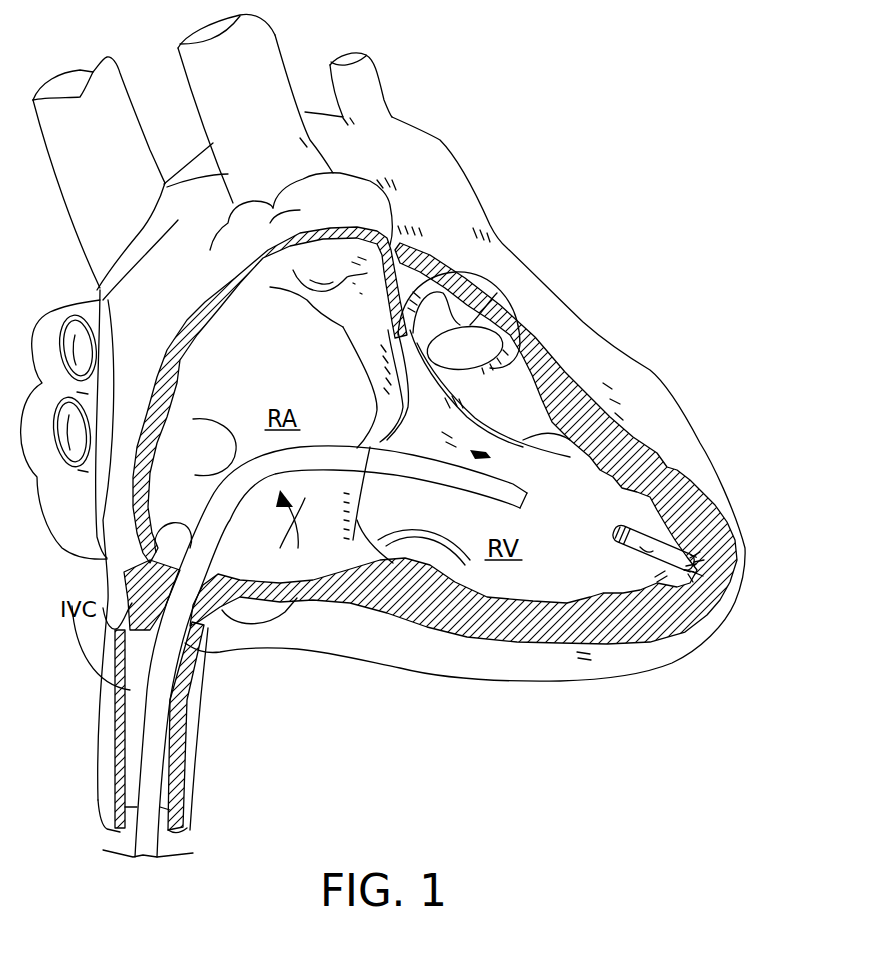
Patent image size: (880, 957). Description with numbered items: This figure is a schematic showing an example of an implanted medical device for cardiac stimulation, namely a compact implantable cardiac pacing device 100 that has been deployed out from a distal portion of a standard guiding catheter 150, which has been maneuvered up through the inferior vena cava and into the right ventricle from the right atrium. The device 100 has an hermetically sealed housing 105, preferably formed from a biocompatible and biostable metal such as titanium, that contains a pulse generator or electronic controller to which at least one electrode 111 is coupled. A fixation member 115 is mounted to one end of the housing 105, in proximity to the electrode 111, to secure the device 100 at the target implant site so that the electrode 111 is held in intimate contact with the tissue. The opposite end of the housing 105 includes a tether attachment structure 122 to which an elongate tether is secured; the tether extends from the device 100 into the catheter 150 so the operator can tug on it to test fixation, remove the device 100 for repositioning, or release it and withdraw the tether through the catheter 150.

The device 100 is at (683, 570).
The housing 105 is at (655, 548).
The electrode 111 is at (700, 583).
The fixation member 115 is at (660, 572).
The tether attachment structure 122 is at (617, 526).
The guiding catheter 150 is at (308, 476).